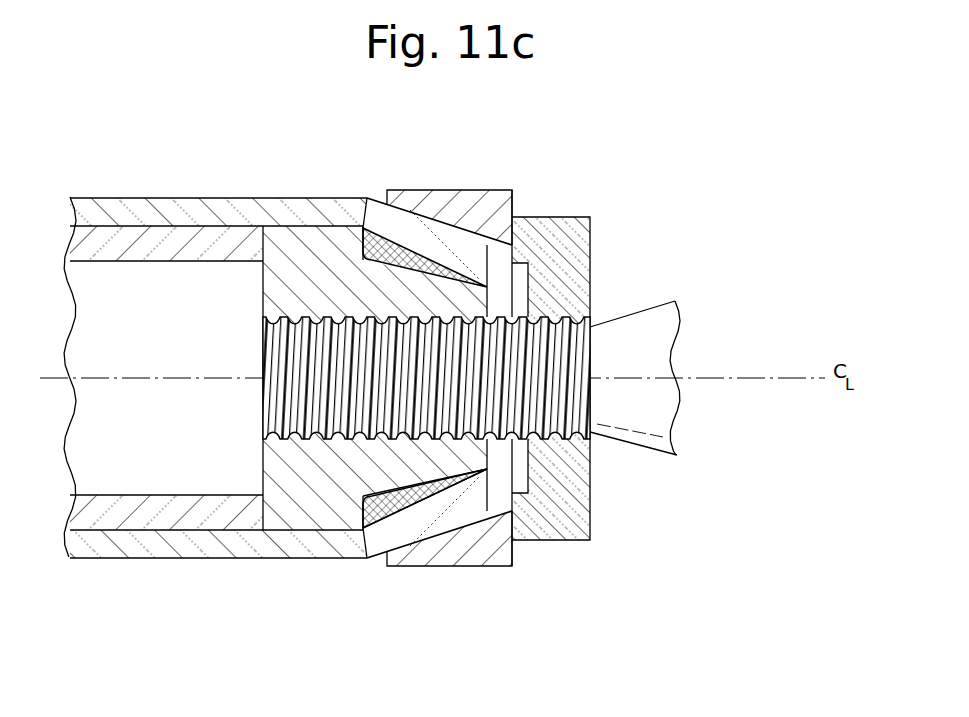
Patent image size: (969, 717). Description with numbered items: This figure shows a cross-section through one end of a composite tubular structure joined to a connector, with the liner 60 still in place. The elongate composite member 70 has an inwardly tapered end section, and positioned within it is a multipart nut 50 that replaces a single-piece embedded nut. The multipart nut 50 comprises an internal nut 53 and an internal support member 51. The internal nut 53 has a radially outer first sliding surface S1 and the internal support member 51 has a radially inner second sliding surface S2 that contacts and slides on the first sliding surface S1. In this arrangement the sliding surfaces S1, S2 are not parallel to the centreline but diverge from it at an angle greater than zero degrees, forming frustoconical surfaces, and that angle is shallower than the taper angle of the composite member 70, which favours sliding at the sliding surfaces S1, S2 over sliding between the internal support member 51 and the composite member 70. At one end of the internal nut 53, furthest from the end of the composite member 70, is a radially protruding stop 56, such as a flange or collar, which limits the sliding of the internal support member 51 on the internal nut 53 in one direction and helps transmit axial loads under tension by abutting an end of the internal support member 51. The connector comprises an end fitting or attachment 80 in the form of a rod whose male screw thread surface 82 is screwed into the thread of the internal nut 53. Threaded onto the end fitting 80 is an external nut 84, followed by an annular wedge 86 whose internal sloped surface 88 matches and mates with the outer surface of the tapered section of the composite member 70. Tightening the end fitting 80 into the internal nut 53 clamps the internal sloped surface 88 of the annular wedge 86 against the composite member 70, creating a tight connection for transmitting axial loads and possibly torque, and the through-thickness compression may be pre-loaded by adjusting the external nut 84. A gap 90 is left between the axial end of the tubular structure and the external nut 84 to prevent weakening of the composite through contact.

The multipart nut 50 is at (250, 468).
The internal support member 51 is at (380, 250).
The internal nut 53 is at (312, 277).
The radially protruding stop 56 is at (278, 240).
The inner tube 60 is at (177, 248).
The composite member 70 is at (112, 206).
The end fitting or attachment 80 is at (467, 378).
The male screw thread surface 82 is at (340, 400).
The external nut 84 is at (573, 237).
The annular wedge 86 is at (460, 200).
The internal sloped surface 88 is at (437, 542).
The gap 90 is at (520, 472).
The first sliding surface S1 is at (357, 488).
The second sliding surface S2 is at (392, 517).